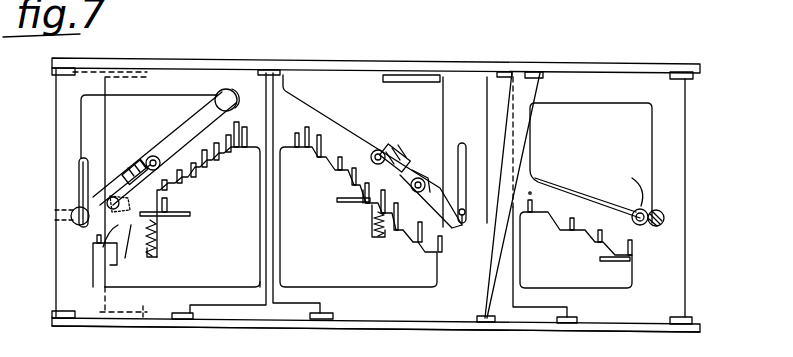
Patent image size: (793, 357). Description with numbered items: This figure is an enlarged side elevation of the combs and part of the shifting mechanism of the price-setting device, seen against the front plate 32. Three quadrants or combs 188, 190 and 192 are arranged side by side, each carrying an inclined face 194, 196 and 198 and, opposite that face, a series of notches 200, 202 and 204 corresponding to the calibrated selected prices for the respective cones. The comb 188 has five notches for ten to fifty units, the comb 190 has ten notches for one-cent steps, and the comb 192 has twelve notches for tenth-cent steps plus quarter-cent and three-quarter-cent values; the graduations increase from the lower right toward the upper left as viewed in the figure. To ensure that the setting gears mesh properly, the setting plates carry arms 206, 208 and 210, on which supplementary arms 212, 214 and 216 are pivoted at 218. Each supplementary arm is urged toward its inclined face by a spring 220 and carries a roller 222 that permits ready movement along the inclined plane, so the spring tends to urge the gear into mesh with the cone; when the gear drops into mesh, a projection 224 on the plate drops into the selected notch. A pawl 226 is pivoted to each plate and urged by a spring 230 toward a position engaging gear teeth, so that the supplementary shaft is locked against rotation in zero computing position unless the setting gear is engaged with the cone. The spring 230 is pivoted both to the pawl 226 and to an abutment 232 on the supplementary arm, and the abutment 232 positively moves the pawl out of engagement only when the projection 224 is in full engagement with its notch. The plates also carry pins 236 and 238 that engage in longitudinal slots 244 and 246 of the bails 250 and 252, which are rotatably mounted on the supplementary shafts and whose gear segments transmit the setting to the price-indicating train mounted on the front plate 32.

The front plate 32 is at (410, 328).
The comb 188 is at (540, 186).
The comb 190 is at (320, 120).
The comb 192 is at (203, 135).
The inclined face 194 is at (566, 190).
The inclined face 196 is at (334, 125).
The inclined face 198 is at (180, 147).
The notches 200 is at (572, 233).
The notches 202 is at (317, 158).
The notches 204 is at (203, 167).
The arm 206 is at (610, 259).
The arm 208 is at (337, 200).
The arm 210 is at (190, 214).
The supplementary arm 212 is at (636, 190).
The supplementary arm 214 is at (408, 147).
The supplementary arm 216 is at (112, 178).
The pivot 218 is at (80, 200).
The spring 220 is at (157, 242).
The roller 222 is at (152, 156).
The projection 224 is at (165, 203).
The pawl 226 is at (131, 226).
The spring 230 is at (93, 242).
The abutment 232 is at (103, 247).
The pin 236 is at (463, 224).
The pin 238 is at (76, 222).
The longitudinal slot 244 is at (470, 143).
The longitudinal slot 246 is at (80, 160).
The bail 250 is at (453, 84).
The bail 252 is at (80, 115).